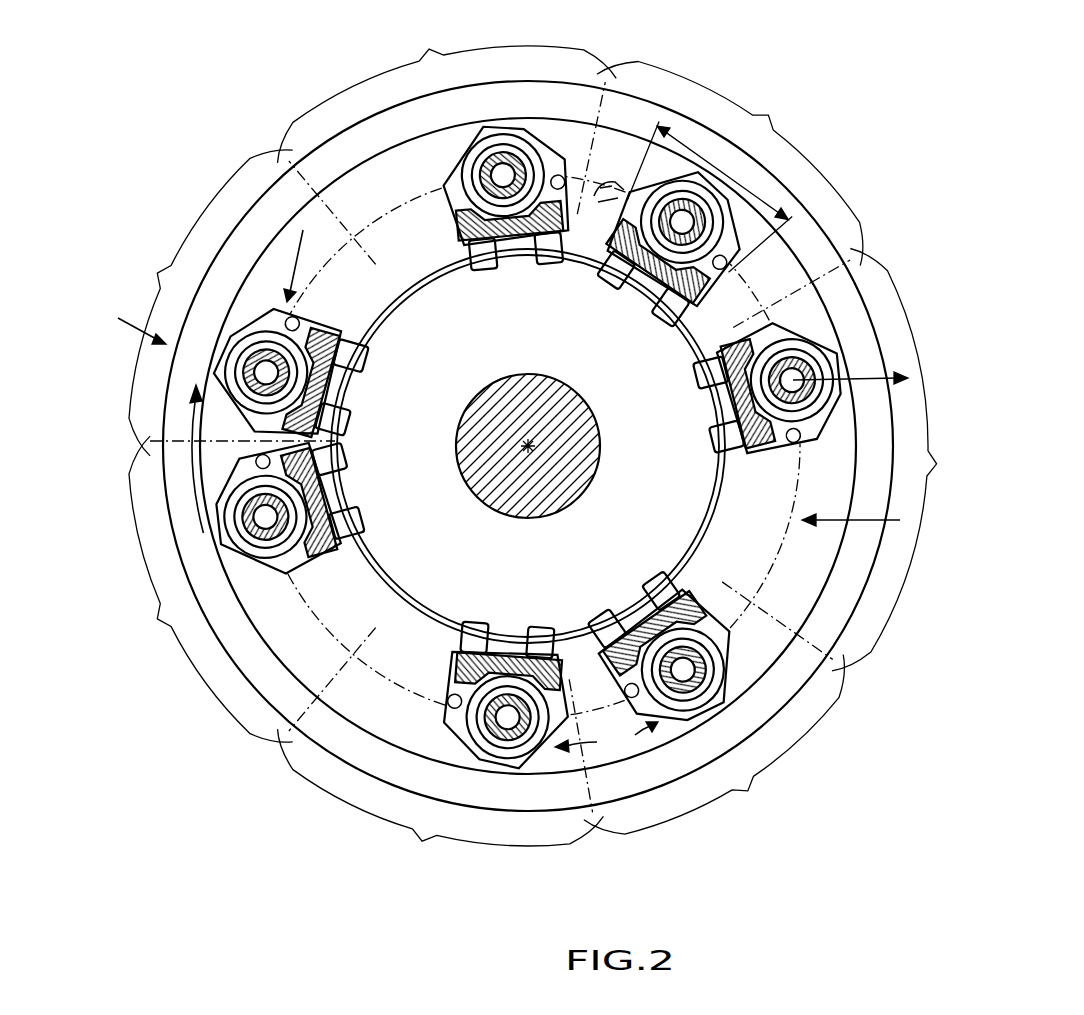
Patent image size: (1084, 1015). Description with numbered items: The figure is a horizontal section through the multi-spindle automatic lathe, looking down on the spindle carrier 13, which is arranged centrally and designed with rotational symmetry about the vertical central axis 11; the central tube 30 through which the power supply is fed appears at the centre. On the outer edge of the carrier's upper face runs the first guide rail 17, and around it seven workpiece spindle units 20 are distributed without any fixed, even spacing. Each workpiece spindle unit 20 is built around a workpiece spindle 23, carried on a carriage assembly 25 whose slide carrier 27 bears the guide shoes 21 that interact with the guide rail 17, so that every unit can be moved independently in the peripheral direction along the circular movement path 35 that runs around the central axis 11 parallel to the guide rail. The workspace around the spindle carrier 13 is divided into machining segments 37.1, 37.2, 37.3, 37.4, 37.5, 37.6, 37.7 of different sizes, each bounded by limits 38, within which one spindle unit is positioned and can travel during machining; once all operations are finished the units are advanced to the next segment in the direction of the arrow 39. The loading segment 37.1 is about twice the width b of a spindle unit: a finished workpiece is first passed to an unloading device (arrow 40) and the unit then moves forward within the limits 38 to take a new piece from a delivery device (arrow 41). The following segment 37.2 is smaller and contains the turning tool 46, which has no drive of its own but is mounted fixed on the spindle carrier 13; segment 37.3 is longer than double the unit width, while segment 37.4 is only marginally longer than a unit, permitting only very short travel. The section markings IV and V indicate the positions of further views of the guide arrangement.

The central axis 11 is at (532, 442).
The spindle carrier 13 is at (650, 508).
The first guide rail 17 is at (383, 317).
The workpiece spindle unit 20 is at (606, 739).
The guide shoe 21 is at (350, 427).
The workpiece spindle 23 is at (263, 350).
The carriage assembly 25 is at (327, 565).
The slide carrier 27 is at (330, 507).
The central tube 30 is at (554, 515).
The movement path 35 is at (428, 265).
The loading segment 37.1 is at (906, 460).
The machining segment 37.2 is at (714, 745).
The machining segment 37.3 is at (441, 793).
The machining segment 37.4 is at (186, 589).
The machining segment 37.5 is at (206, 303).
The machining segment 37.6 is at (447, 83).
The machining segment 37.7 is at (730, 164).
The limits 38 is at (327, 203).
The arrow 39 is at (190, 405).
The arrow 40 is at (875, 365).
The arrow 41 is at (863, 518).
The turning tool 46 is at (597, 203).
The width of a workpiece spindle unit b is at (709, 197).
The section view IV is at (112, 318).
The section view V is at (322, 255).